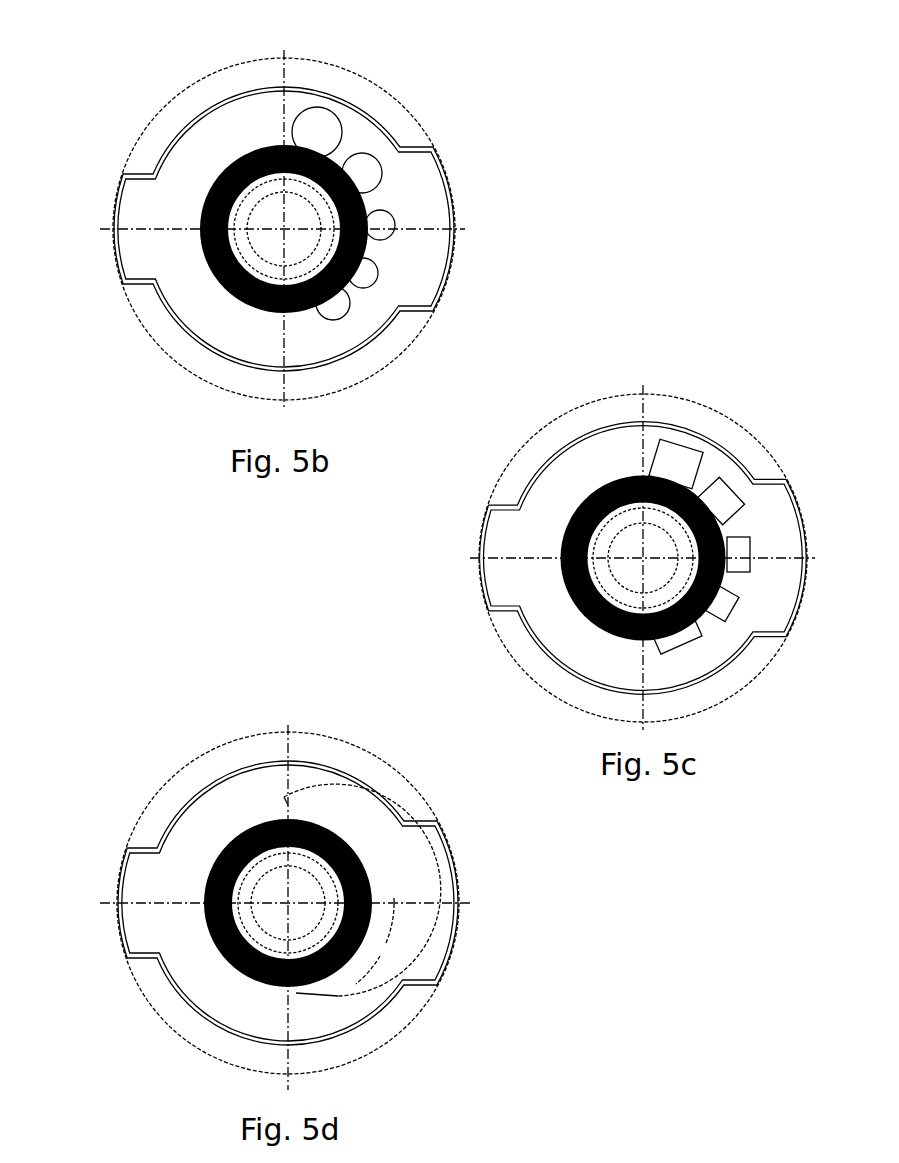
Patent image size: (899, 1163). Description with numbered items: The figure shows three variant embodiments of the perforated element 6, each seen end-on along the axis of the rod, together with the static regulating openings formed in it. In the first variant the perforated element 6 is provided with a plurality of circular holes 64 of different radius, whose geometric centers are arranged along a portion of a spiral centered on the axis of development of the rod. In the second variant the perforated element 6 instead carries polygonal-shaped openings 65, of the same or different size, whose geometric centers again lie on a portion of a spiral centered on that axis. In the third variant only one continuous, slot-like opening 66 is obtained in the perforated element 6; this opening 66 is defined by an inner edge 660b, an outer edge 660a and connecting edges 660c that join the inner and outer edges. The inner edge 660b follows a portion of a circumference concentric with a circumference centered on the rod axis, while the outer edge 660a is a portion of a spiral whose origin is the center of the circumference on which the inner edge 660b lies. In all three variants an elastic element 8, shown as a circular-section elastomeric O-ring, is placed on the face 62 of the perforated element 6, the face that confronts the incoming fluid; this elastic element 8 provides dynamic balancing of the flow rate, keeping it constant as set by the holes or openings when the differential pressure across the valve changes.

In FIG. 5B, the perforated element 6 is at (397, 79).
In FIG. 5C, the perforated element 6 is at (758, 415).
In FIG. 5D, the perforated element 6 is at (408, 760).
In FIG. 5B, the elastic element 8 is at (207, 267).
In FIG. 5C, the elastic element 8 is at (570, 597).
In FIG. 5D, the elastic element 8 is at (208, 927).
In FIG. 5B, the face of the perforated element 62 is at (138, 218).
In FIG. 5C, the face of the perforated element 62 is at (497, 550).
In FIG. 5D, the face of the perforated element 62 is at (143, 900).
In FIG. 5B, the circular holes 64 is at (363, 172).
In FIG. 5C, the polygonal-shaped openings 65 is at (720, 510).
In FIG. 5D, the slot-like opening 66 is at (372, 857).
In FIG. 5D, the outer edge 660a is at (397, 920).
In FIG. 5D, the inner edge 660b is at (357, 958).
In FIG. 5D, the connecting edges 660c is at (287, 795).